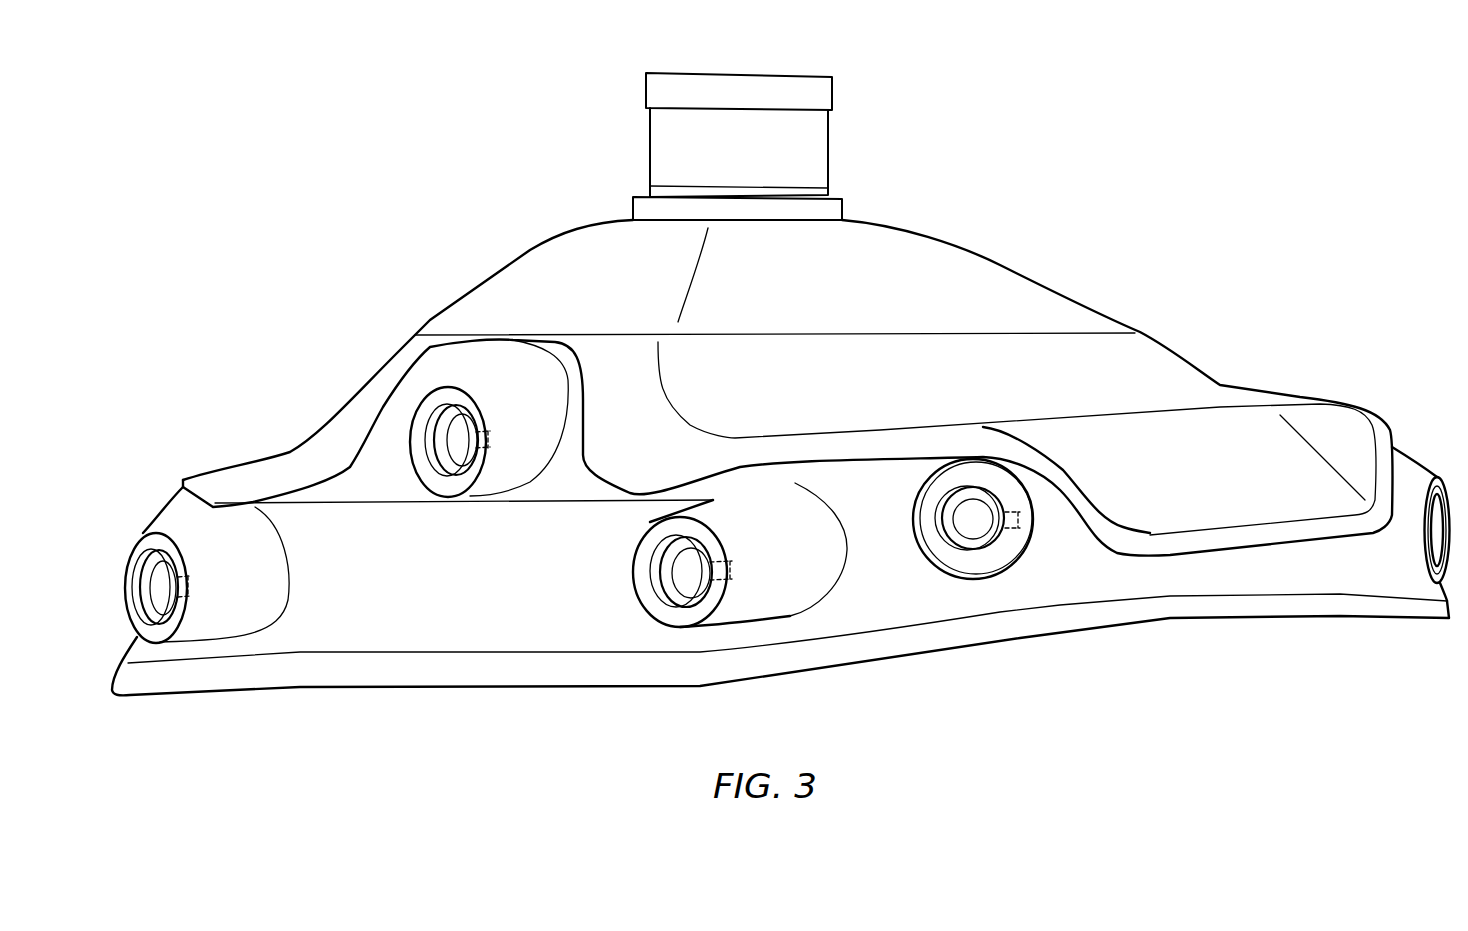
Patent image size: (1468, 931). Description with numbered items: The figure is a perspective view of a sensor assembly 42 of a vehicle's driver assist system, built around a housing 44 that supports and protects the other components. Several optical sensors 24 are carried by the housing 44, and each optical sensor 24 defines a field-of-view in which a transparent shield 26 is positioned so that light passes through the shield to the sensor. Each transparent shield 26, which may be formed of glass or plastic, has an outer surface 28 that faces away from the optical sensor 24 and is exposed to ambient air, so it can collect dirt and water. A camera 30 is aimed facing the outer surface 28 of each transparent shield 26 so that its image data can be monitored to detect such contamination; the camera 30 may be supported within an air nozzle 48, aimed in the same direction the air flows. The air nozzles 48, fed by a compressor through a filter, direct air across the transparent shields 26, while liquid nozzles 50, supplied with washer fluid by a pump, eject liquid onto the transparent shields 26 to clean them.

The sensor assembly 42 is at (362, 190).
The housing 44 is at (980, 268).
The optical sensor 24 is at (604, 138).
The transparent shield 26 is at (830, 150).
The outer surface 28 is at (158, 605).
The camera 30 is at (190, 594).
The air nozzle 48 is at (170, 577).
The liquid nozzle 50 is at (150, 552).